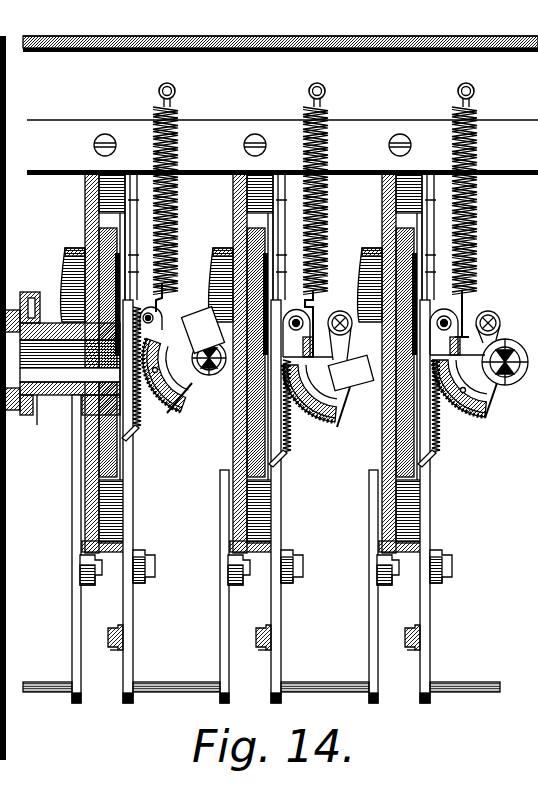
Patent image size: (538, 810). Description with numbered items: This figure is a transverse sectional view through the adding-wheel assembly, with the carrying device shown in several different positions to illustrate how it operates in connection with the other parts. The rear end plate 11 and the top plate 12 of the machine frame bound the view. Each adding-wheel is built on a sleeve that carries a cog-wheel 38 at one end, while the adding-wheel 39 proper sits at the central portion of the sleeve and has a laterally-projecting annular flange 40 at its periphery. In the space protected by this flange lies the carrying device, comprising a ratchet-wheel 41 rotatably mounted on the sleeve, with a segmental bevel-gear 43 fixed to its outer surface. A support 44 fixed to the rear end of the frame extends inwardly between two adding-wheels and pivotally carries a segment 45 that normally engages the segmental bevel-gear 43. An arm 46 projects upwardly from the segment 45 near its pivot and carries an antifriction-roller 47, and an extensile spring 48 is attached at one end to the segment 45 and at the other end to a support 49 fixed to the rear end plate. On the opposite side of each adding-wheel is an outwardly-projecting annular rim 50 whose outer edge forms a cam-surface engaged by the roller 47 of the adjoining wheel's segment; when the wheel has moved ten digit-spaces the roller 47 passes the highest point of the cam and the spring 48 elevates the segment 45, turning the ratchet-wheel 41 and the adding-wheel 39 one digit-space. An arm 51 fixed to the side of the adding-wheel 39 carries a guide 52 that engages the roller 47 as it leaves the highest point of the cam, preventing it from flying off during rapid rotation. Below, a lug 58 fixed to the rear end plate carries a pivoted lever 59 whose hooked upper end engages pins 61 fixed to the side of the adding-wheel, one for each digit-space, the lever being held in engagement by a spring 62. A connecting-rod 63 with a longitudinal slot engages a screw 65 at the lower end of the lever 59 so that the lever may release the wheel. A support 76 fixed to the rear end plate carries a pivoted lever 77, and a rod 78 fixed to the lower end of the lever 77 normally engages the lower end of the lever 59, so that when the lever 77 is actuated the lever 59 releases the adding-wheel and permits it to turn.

The rear end plate 11 is at (8, 72).
The top plate 12 is at (260, 52).
The cog-wheel 38 is at (38, 415).
The adding-wheel 39 is at (85, 206).
The annular flange 40 is at (117, 150).
The ratchet-wheel 41 is at (126, 481).
The segmental bevel-gear 43 is at (139, 436).
The support 44 is at (194, 320).
The segment 45 is at (172, 406).
The arm 46 is at (500, 342).
The antifriction-roller 47 is at (205, 309).
The extensile spring 48 is at (178, 196).
The support 49 is at (158, 91).
The annular rim 50 is at (70, 247).
The arm 51 is at (333, 349).
The guide 52 is at (192, 385).
The lug 58 is at (140, 584).
The lever 59 is at (134, 669).
The pins 61 is at (126, 517).
The spring 62 is at (138, 234).
The connecting-rod 63 is at (116, 651).
The screw 65 is at (109, 635).
The support 76 is at (90, 585).
The lever 77 is at (72, 625).
The rod 78 is at (46, 692).